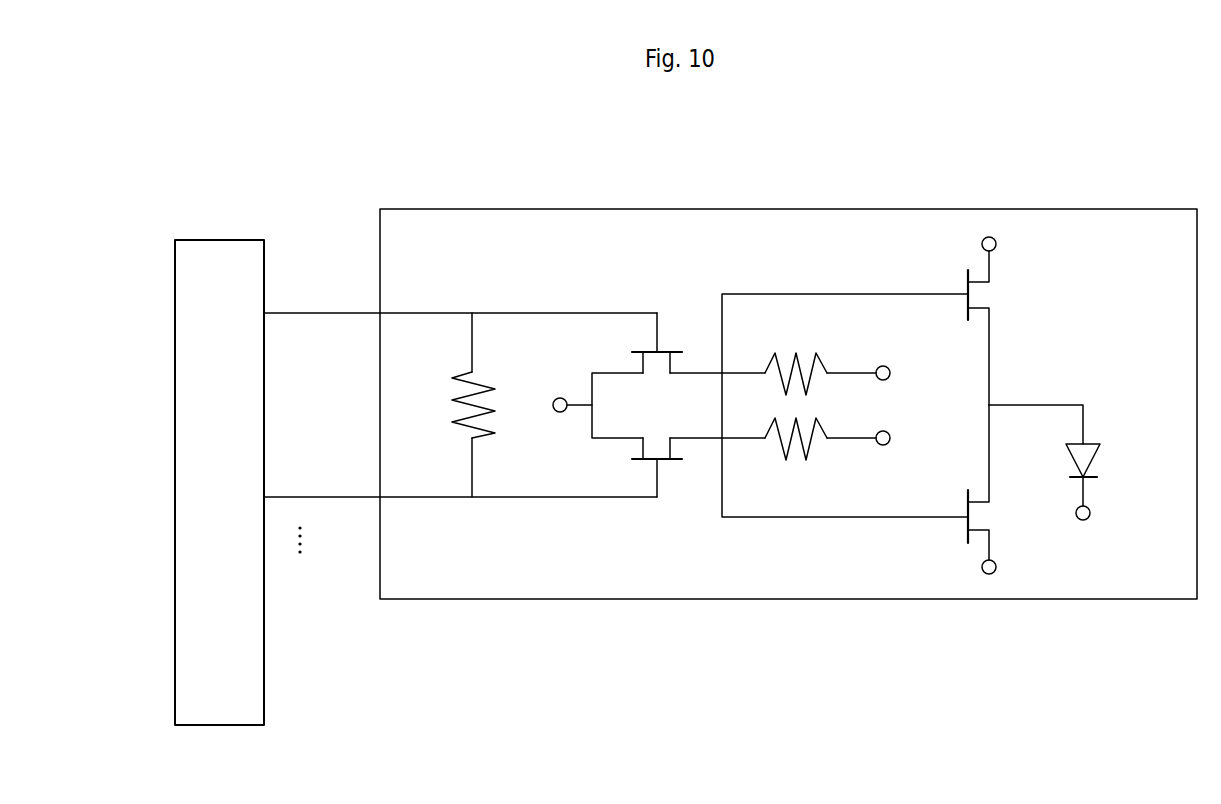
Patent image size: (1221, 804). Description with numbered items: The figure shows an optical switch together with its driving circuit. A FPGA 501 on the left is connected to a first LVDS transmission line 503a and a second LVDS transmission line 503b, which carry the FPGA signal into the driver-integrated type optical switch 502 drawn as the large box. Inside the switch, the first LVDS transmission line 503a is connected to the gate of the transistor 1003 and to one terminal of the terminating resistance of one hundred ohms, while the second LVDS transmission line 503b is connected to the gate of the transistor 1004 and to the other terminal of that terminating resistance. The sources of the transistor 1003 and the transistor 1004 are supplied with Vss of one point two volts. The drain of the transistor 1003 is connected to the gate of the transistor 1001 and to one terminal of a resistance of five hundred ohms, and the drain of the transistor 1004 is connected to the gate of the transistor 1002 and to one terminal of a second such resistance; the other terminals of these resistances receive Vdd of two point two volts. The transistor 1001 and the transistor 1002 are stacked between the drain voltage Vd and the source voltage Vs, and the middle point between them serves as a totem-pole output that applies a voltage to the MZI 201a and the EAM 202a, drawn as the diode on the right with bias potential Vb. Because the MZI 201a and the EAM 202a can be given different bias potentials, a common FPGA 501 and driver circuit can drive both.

The FPGA 501 is at (222, 725).
The driver-integrated type optical switch 502 is at (793, 600).
The first LVDS transmission line 503a is at (288, 310).
The second LVDS transmission line 503b is at (343, 500).
The transistor 1001 is at (966, 276).
The transistor 1002 is at (966, 534).
The transistor 1003 is at (632, 351).
The transistor 1004 is at (632, 460).
The MZI 201a is at (1088, 464).
The EAM 202a is at (1088, 464).